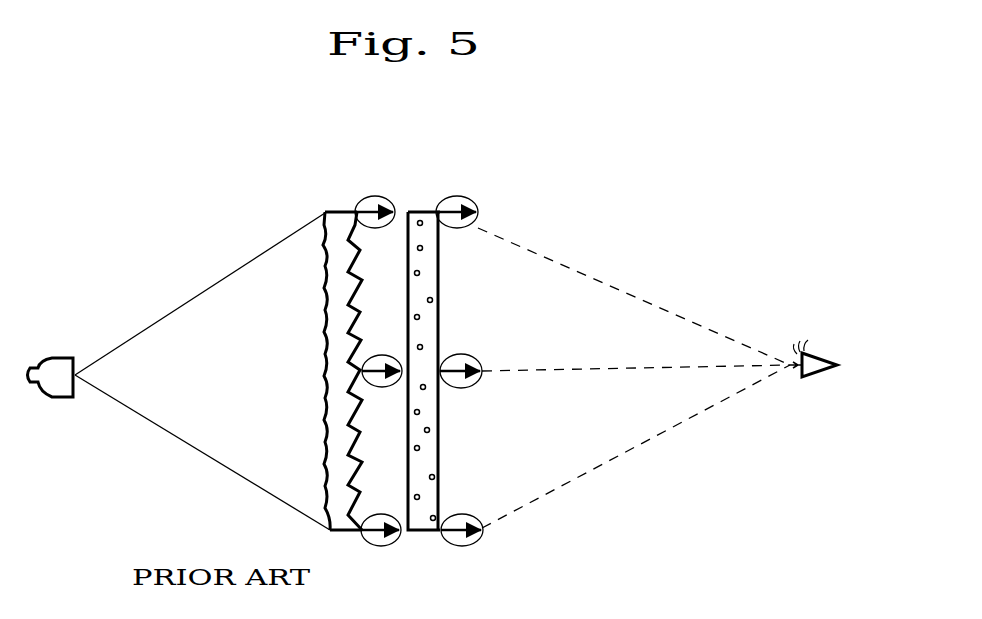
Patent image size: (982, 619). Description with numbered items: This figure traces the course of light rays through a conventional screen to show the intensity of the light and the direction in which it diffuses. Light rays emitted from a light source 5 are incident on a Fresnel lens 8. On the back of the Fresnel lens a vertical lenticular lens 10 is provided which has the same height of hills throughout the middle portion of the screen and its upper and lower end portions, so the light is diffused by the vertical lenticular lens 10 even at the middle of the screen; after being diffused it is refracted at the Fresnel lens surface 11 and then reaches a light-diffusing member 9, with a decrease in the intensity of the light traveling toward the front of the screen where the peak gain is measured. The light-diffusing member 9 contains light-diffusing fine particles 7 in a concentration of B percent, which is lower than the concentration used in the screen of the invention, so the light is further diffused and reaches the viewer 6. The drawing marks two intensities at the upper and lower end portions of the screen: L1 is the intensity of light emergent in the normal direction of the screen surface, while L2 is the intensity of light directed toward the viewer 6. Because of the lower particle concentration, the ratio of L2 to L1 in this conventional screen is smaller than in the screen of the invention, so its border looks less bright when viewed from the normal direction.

The light source 5 is at (57, 358).
The viewer 6 is at (812, 352).
The light-diffusing fine particles 7 is at (444, 329).
The Fresnel lens 8 is at (334, 329).
The light-diffusing member 9 is at (413, 218).
The vertical lenticular lens 10 is at (325, 277).
The Fresnel lens surface 11 is at (348, 245).
The intensity of light emergent to the normal direction L1 is at (457, 202).
The intensity of light directed toward the viewer L2 is at (443, 232).